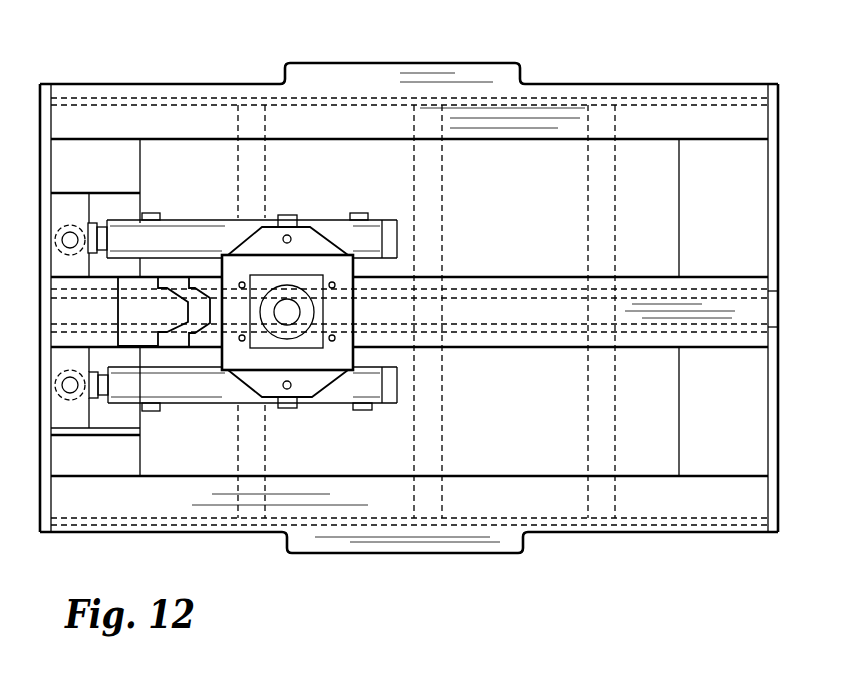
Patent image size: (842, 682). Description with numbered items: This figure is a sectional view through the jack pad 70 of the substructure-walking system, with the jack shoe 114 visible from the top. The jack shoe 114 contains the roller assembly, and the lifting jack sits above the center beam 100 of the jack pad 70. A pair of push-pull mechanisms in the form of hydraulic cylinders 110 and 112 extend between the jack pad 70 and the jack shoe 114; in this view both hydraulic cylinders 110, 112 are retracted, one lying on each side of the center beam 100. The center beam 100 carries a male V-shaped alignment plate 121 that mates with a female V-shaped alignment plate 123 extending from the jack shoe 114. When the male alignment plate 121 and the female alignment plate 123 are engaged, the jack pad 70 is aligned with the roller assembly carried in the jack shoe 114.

The jack pad 70 is at (212, 75).
The center beam 100 is at (652, 310).
The hydraulic cylinder 110 is at (375, 387).
The hydraulic cylinder 112 is at (370, 236).
The jack shoe 114 is at (295, 285).
The male V-shaped alignment plate 121 is at (167, 315).
The female V-shaped alignment plate 123 is at (201, 284).